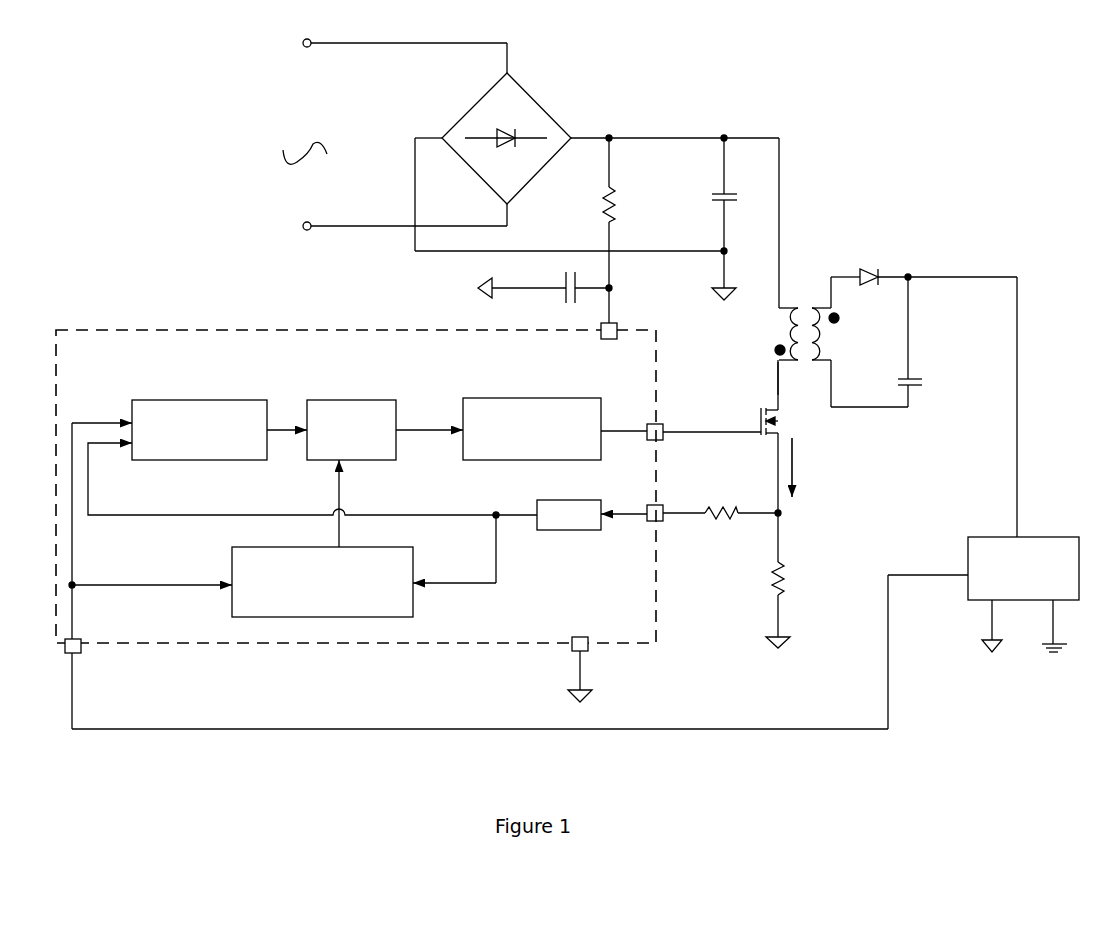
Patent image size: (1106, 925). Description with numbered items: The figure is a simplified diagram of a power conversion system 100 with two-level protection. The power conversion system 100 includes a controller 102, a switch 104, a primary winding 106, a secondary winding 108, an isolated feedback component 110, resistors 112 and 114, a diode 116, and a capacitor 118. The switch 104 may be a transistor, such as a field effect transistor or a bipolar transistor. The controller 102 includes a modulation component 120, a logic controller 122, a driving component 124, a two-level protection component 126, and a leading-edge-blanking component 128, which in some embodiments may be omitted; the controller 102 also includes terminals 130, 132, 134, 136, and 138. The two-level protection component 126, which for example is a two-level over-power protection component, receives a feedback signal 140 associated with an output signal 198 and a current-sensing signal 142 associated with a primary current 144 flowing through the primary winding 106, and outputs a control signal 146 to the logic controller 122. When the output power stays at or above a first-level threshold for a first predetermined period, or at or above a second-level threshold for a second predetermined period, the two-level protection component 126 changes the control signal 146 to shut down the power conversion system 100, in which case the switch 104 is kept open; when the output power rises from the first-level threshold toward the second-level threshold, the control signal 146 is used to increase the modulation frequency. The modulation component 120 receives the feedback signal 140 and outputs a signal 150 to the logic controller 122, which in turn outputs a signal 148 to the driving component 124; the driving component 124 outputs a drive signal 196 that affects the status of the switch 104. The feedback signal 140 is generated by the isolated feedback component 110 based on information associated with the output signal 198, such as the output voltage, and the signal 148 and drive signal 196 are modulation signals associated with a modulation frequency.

The power conversion system 100 is at (155, 170).
The controller 102 is at (145, 330).
The switch 104 is at (761, 417).
The primary winding 106 is at (795, 307).
The secondary winding 108 is at (818, 296).
The isolated feedback component 110 is at (968, 537).
The resistor 112 is at (726, 520).
The resistor 114 is at (772, 585).
The diode 116 is at (870, 270).
The capacitor 118 is at (914, 381).
The modulation component 120 is at (198, 400).
The logic controller 122 is at (355, 400).
The driving component 124 is at (511, 398).
The two-level protection component 126 is at (413, 600).
The leading-edge-blanking (LEB) component 128 is at (570, 530).
The terminal 130 is at (613, 323).
The terminal 132 is at (660, 440).
The terminal 134 is at (660, 520).
The terminal 136 is at (586, 652).
The terminal 138 is at (76, 654).
The feedback signal 140 is at (888, 703).
The current-sensing signal 142 is at (455, 582).
The primary current 144 is at (779, 372).
The control signal 146 is at (339, 492).
The signal 148 is at (415, 431).
The signal 150 is at (282, 430).
The drive signal 196 is at (722, 434).
The output signal 198 is at (916, 277).